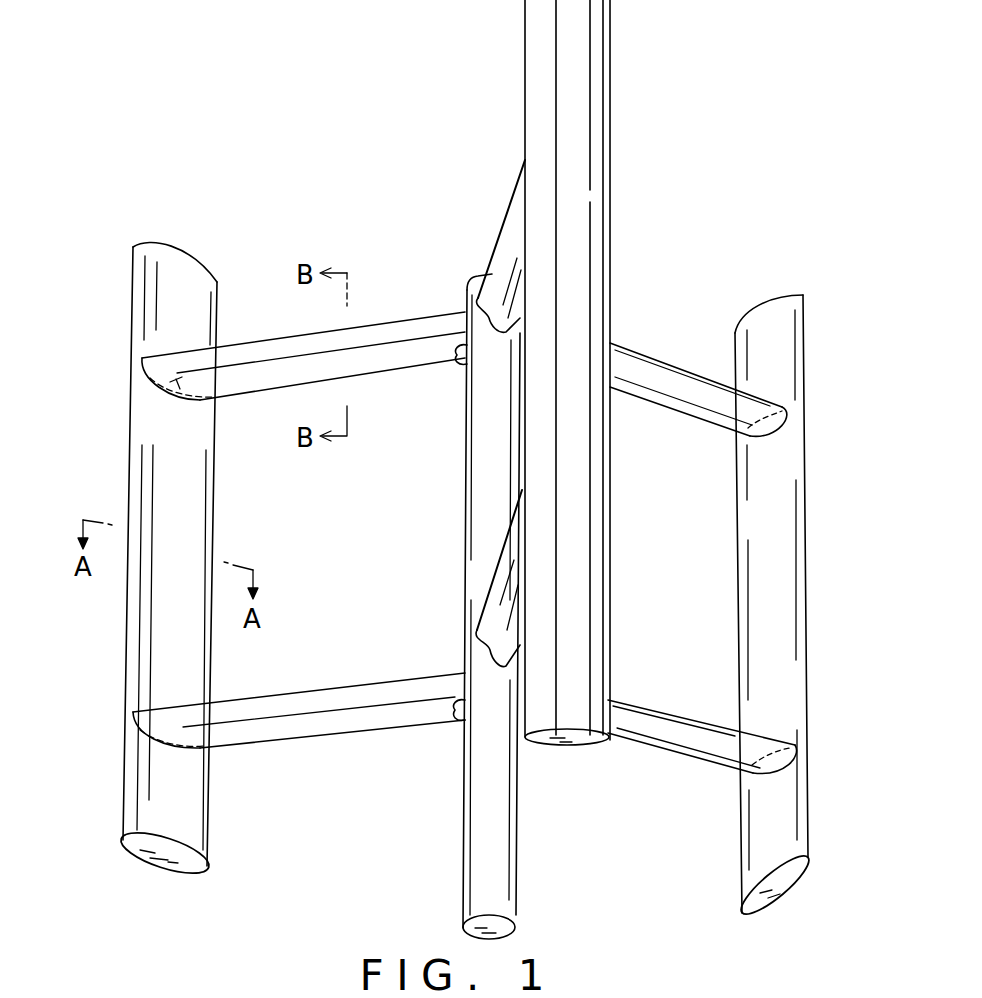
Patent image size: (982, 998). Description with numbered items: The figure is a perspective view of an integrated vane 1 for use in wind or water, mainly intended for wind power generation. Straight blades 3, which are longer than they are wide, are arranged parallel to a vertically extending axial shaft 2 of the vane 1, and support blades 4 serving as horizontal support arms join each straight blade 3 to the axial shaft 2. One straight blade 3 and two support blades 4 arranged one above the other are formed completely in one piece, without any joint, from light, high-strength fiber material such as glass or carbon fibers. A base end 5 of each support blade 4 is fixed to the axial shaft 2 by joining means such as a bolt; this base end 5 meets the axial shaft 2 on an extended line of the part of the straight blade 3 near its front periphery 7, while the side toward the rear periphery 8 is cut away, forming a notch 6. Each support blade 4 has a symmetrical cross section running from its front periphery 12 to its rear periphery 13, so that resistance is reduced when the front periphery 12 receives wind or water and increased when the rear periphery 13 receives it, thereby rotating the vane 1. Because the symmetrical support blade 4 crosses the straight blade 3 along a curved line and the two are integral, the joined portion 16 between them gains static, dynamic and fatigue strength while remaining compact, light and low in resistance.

The integrated vane 1 is at (690, 106).
The axial shaft 2 is at (466, 549).
The straight blade 3 is at (439, 581).
The support blade 4 is at (465, 479).
The base end 5 is at (483, 337).
The notch 6 is at (460, 362).
The front periphery 7 is at (134, 485).
The rear periphery 8 is at (210, 492).
The front periphery 12 is at (246, 343).
The rear periphery 13 is at (246, 395).
The joined portion 16 is at (170, 390).